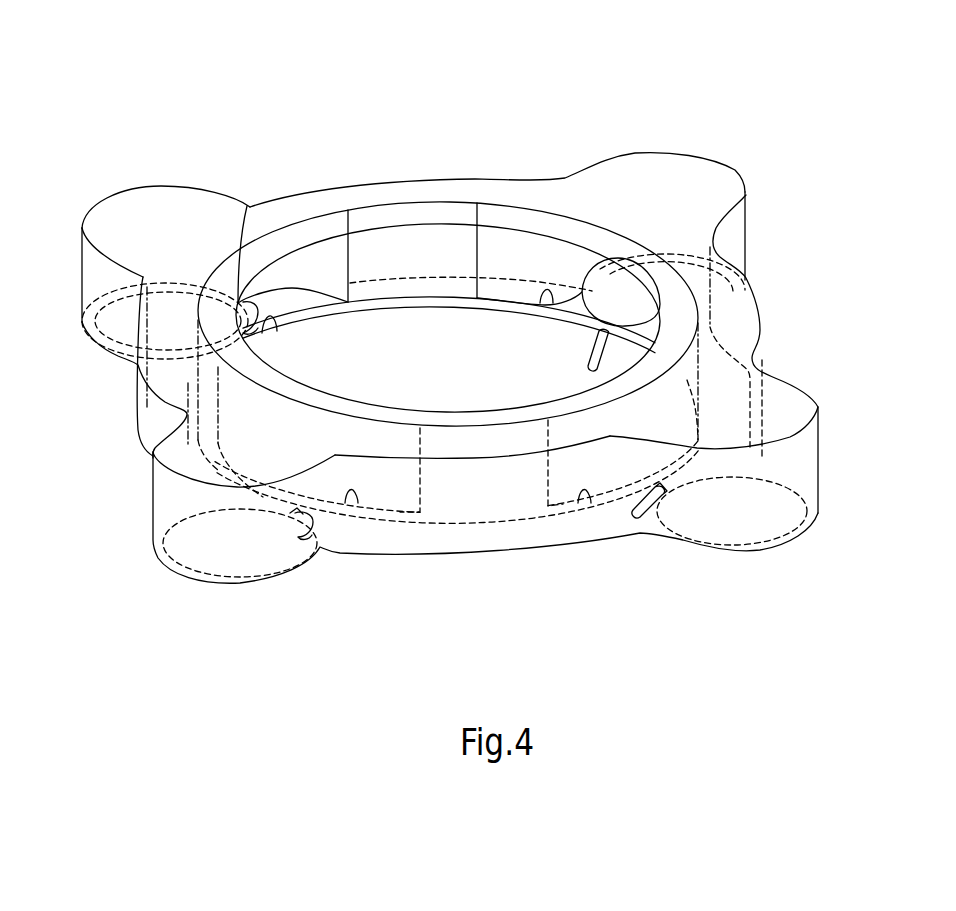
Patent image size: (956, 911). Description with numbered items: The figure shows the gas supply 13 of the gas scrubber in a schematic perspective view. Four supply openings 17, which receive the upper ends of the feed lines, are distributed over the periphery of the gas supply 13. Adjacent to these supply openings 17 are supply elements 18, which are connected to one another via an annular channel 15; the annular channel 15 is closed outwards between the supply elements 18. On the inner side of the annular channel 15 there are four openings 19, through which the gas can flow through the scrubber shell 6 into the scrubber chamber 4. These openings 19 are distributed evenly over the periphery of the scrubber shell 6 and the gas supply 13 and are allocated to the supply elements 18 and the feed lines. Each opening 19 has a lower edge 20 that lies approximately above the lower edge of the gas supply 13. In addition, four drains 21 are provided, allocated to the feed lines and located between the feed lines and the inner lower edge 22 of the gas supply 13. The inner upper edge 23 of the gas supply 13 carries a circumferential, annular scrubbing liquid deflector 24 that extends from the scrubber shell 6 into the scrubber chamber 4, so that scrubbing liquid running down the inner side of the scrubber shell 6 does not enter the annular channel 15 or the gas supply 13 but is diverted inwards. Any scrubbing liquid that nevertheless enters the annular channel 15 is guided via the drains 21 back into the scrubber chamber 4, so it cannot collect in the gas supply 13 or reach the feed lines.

The gas supply 13 is at (241, 112).
The scrubber chamber 4 is at (446, 385).
The scrubber shell 6 is at (400, 245).
The annular channel 15 is at (308, 296).
The supply openings 17 is at (625, 297).
The supply elements 18 is at (125, 212).
The openings 19 is at (317, 267).
The lower edge 20 is at (272, 325).
The drains 21 is at (585, 357).
The inner lower edge 22 is at (403, 532).
The inner upper edge 23 is at (605, 228).
The scrubbing liquid deflector 24 is at (562, 230).